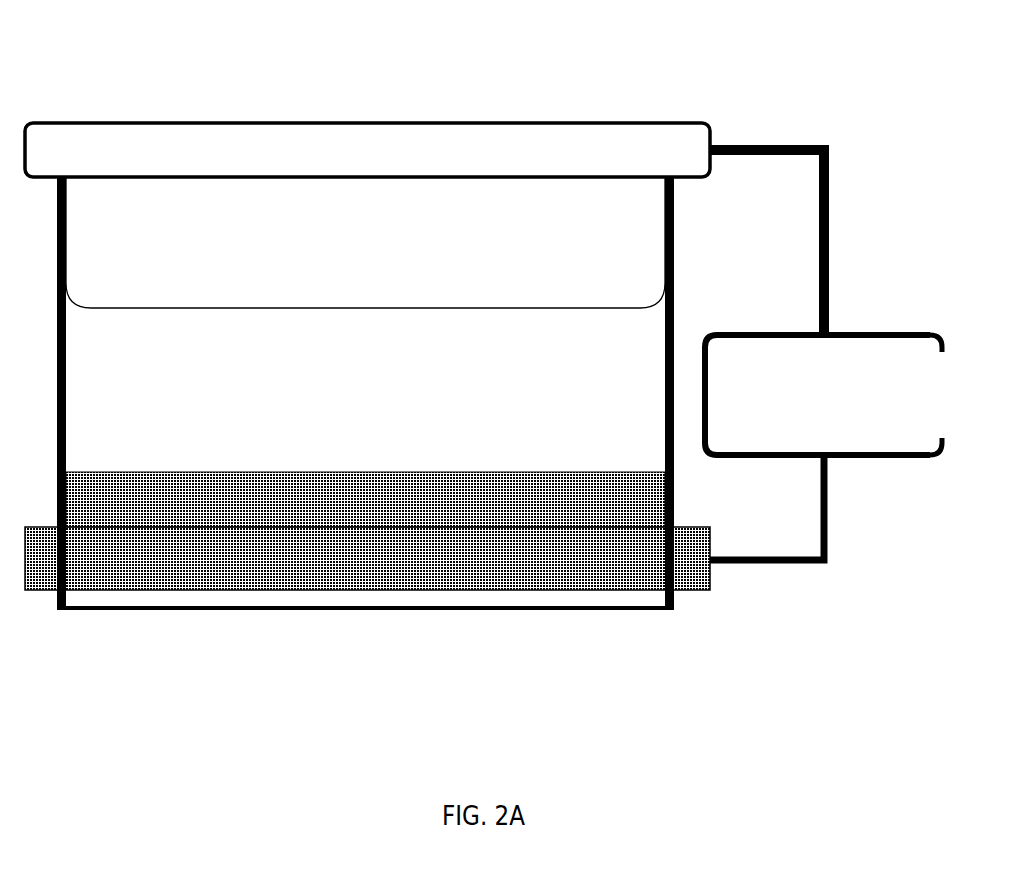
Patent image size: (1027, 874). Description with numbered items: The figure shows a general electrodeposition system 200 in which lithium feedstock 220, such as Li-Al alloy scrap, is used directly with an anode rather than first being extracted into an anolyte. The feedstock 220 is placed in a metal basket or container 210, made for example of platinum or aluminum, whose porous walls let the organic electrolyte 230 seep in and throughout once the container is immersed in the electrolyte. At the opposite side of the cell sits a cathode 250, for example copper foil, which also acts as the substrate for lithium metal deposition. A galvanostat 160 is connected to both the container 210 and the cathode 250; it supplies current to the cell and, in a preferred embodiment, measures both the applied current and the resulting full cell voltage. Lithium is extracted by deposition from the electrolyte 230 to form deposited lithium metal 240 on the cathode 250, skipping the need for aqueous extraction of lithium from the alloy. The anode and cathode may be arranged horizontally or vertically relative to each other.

The electrodeposition system 200 is at (183, 65).
The container 210 is at (635, 122).
The lithium feedstock 220 is at (515, 221).
The electrolyte 230 is at (510, 372).
The deposited lithium metal 240 is at (612, 505).
The cathode 250 is at (587, 579).
The galvanostat 160 is at (838, 315).